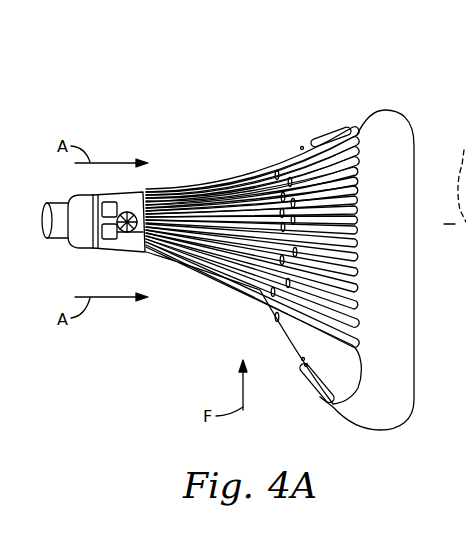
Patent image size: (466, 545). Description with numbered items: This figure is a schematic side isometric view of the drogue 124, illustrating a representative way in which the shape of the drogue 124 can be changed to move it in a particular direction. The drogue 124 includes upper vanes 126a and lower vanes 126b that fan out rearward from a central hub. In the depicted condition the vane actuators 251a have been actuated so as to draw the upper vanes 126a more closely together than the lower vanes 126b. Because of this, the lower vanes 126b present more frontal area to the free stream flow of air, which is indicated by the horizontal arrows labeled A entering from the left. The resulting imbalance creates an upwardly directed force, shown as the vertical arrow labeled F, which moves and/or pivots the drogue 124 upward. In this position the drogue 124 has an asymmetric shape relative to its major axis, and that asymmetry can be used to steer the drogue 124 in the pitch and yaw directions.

The drogue 124 is at (176, 93).
The upper vanes 126a is at (292, 184).
The lower vanes 126b is at (262, 287).
The vane actuators 251a is at (312, 256).